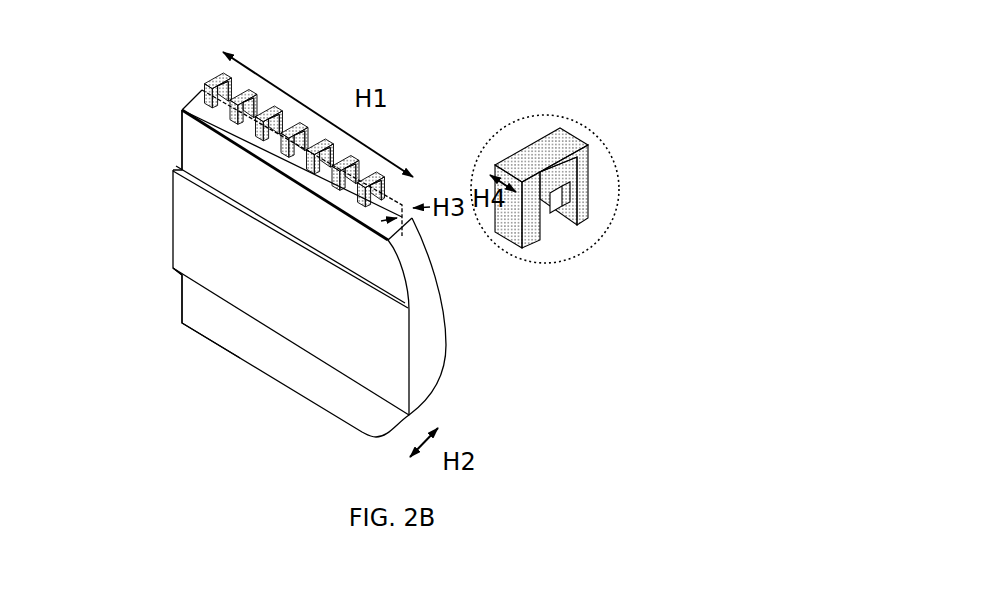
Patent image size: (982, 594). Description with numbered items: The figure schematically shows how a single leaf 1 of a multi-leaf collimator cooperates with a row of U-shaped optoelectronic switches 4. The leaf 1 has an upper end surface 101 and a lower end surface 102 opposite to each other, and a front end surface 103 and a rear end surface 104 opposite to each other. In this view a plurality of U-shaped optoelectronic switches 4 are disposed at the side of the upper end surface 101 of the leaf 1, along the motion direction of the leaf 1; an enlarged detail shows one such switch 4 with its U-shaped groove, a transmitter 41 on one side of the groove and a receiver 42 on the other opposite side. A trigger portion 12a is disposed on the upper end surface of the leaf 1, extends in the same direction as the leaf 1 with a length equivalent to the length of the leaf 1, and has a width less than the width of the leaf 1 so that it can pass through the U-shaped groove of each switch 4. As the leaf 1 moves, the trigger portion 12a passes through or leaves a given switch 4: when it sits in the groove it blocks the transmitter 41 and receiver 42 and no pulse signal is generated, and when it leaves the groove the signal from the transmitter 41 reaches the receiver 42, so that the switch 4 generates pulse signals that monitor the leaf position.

The leaf 1 is at (292, 367).
The upper end surface 101 is at (186, 122).
The lower end surface 102 is at (200, 338).
The front end surface 103 is at (430, 340).
The rear end surface 104 is at (180, 153).
The U-shaped optoelectronic switch 4 is at (436, 134).
The trigger portion 12a is at (197, 88).
The transmitter 41 is at (634, 202).
The receiver 42 is at (565, 200).